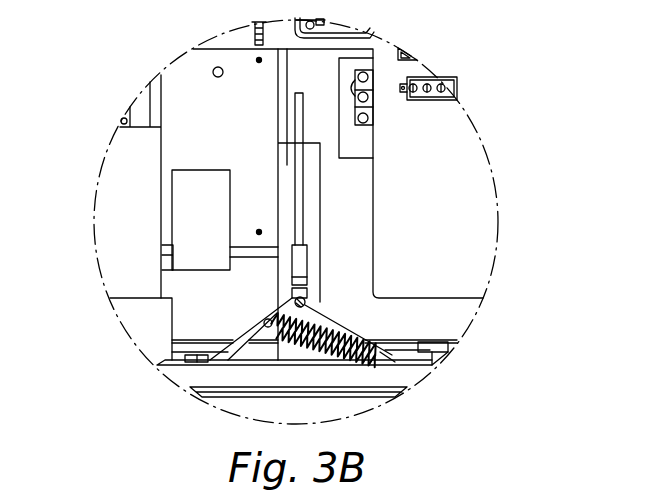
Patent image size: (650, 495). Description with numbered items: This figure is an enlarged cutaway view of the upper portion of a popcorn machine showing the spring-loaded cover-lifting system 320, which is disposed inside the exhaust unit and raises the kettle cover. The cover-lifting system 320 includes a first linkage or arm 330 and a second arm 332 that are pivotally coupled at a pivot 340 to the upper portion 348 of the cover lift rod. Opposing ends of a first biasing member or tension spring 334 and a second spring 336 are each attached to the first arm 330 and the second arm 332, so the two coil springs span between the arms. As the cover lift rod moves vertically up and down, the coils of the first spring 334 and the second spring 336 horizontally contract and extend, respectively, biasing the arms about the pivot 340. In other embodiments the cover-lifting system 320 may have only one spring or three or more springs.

The cover-lifting system 320 is at (253, 298).
The first arm 330 is at (237, 328).
The second arm 332 is at (342, 323).
The first spring 334 is at (357, 338).
The second spring 336 is at (290, 357).
The pivot 340 is at (306, 299).
The upper portion of the cover lift rod 348 is at (305, 208).